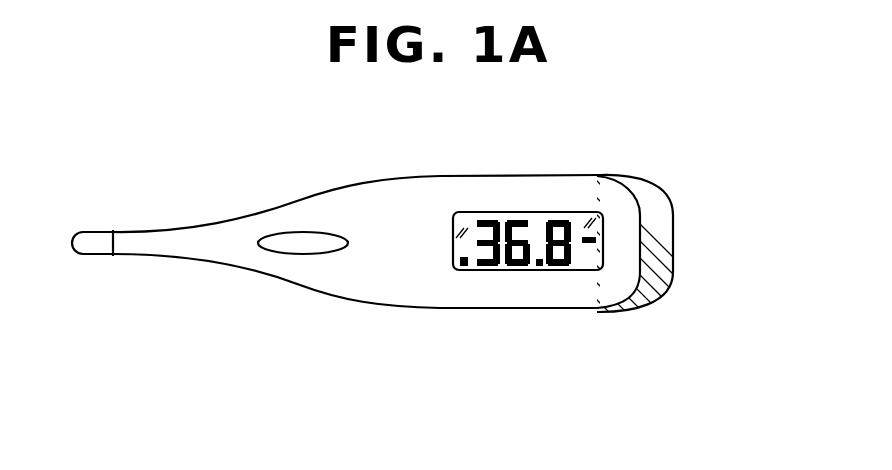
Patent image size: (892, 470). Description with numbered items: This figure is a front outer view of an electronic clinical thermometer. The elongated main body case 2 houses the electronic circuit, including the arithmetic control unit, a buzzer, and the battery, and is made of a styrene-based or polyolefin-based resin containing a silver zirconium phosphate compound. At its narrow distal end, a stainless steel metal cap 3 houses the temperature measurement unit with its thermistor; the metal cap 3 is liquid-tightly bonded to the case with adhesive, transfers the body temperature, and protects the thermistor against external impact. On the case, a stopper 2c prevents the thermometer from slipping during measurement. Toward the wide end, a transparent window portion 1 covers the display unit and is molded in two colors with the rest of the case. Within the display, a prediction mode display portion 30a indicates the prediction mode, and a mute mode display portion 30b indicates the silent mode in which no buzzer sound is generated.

The window portion 1 is at (467, 222).
The main body case 2 is at (535, 176).
The stopper 2c is at (303, 232).
The metal cap 3 is at (89, 238).
The prediction mode display portion 30a is at (603, 238).
The mute mode display portion 30b is at (460, 270).